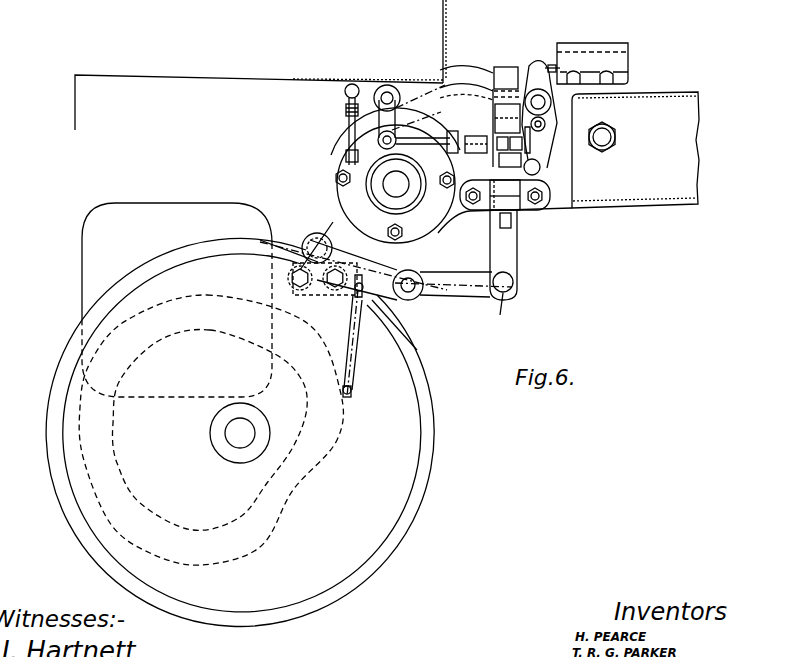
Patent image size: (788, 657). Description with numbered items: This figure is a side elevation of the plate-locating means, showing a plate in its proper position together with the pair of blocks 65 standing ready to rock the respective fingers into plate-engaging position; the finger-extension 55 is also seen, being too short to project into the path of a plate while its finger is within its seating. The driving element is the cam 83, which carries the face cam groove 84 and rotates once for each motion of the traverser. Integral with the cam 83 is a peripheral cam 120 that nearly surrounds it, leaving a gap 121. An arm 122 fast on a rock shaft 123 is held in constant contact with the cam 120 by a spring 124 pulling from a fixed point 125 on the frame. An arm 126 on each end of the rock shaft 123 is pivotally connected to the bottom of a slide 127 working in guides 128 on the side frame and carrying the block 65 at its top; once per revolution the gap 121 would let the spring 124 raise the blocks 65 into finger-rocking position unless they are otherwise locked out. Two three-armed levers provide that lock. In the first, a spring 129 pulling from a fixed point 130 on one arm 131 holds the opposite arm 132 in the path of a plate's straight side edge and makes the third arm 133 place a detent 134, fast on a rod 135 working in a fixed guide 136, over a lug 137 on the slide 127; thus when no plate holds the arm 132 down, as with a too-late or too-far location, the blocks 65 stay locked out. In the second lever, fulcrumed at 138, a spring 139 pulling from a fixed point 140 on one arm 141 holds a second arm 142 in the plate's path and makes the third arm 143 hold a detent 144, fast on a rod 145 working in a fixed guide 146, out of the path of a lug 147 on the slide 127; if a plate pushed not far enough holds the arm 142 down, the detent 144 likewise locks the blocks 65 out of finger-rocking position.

The finger-extension 55 is at (496, 68).
The block 65 is at (508, 68).
The cam 83 is at (351, 585).
The face cam groove 84 is at (120, 476).
The peripheral cam 120 is at (168, 255).
The gap 121 is at (306, 256).
The arm 122 is at (346, 257).
The rock shaft 123 is at (408, 300).
The spring 124 is at (364, 297).
The fixed point 125 is at (352, 393).
The arm 126 is at (453, 284).
The slide 127 is at (503, 262).
The guide 128 is at (387, 85).
The spring 129 is at (350, 120).
The fixed point 130 is at (347, 162).
The arm 131 is at (353, 84).
The arm 132 is at (418, 82).
The arm 133 is at (346, 112).
The detent 134 is at (573, 157).
The rod 135 is at (424, 140).
The fixed guide 136 is at (460, 131).
The lug 137 is at (538, 140).
The fulcrum 138 is at (551, 103).
The spring 139 is at (583, 70).
The fixed point 140 is at (594, 68).
The arm 141 is at (540, 64).
The arm 142 is at (472, 77).
The arm 143 is at (554, 124).
The detent 144 is at (505, 212).
The rod 145 is at (505, 195).
The fixed guide 146 is at (462, 167).
The lug 147 is at (509, 152).